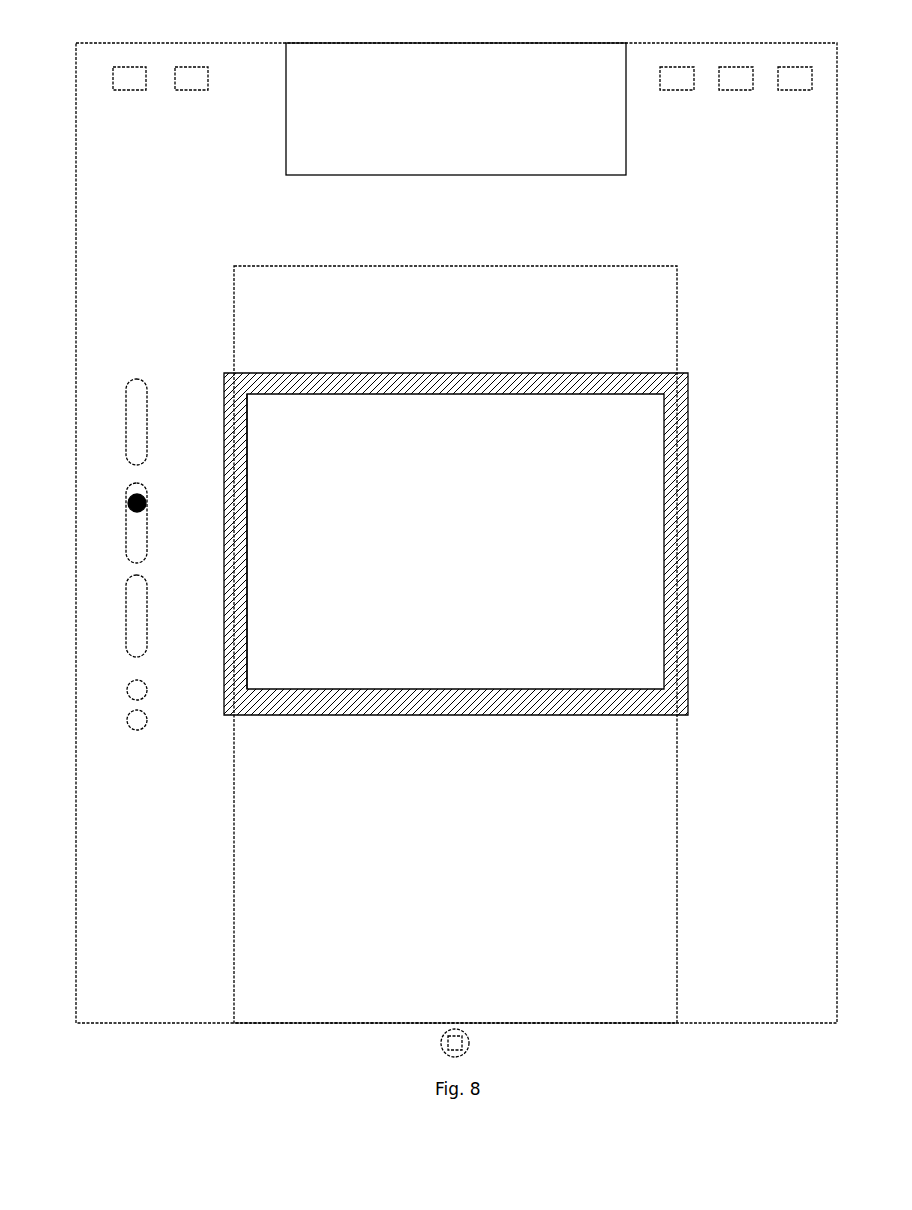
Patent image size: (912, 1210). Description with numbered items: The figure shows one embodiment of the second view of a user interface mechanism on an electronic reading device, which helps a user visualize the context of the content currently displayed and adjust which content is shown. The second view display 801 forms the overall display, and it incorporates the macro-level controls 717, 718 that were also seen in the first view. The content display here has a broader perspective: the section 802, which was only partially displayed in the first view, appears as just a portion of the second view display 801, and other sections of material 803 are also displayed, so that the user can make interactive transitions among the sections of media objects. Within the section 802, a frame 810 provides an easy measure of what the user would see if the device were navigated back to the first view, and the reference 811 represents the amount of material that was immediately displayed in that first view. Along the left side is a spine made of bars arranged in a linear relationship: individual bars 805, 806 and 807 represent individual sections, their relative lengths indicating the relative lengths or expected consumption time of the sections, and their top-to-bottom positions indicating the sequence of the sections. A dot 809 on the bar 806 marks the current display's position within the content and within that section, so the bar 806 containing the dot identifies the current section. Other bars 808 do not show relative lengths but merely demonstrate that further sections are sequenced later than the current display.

The second view display 801 is at (77, 53).
The section 802 is at (234, 272).
The other sections of material 803 is at (286, 110).
The macro-level control 717 is at (160, 78).
The macro-level control 718 is at (736, 78).
The bar 805 is at (122, 393).
The bar 806 is at (117, 543).
The bar 807 is at (126, 614).
The other bars 808 is at (108, 701).
The dot 809 is at (150, 503).
The frame 810 is at (224, 370).
The amount of material displayed in first view 811 is at (303, 635).